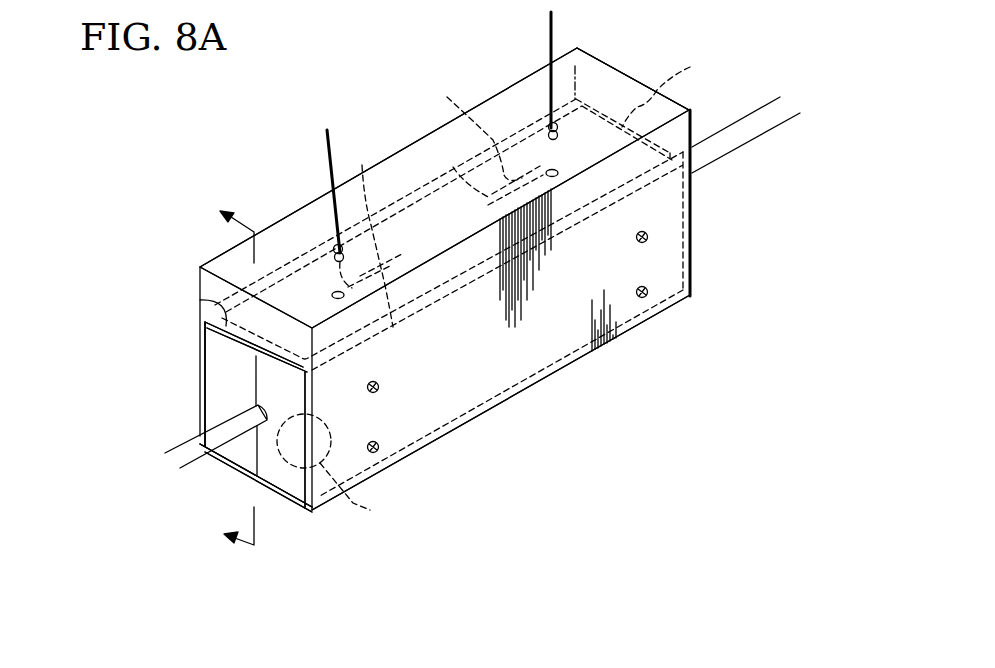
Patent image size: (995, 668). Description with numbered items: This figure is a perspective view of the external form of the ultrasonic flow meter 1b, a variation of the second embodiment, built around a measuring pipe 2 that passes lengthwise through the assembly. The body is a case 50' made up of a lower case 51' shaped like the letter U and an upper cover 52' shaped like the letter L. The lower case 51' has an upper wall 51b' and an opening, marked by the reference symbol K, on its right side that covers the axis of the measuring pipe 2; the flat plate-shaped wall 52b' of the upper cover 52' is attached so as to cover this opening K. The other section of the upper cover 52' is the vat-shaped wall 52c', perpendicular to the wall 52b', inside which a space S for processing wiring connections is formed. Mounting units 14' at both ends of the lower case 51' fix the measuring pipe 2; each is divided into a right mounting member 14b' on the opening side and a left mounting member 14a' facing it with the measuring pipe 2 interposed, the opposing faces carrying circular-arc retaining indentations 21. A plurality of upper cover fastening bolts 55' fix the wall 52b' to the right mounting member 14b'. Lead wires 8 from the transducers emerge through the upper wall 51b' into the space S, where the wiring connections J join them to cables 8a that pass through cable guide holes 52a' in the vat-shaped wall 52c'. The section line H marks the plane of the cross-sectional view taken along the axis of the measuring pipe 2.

The ultrasonic flow meter 1b is at (590, 496).
The measuring pipe 2 is at (753, 112).
The lead wires 8 is at (394, 330).
The cables 8a is at (327, 142).
The mounting units 14' is at (295, 476).
The left mounting member 14a' is at (169, 384).
The right mounting member 14b' is at (262, 505).
The retaining indentation 21 is at (242, 434).
The case 50' is at (483, 280).
The lower case 51' is at (216, 384).
The upper wall 51b' is at (150, 303).
The upper cover 52' is at (397, 188).
The cable guide holes 52a' is at (388, 168).
The wall 52b' is at (501, 402).
The wall 52c' is at (633, 58).
The upper cover fastening bolts 55' is at (508, 374).
The cross-section H- H is at (227, 370).
The wiring connections J is at (436, 203).
The opening K is at (333, 470).
The space for processing wiring connections S is at (662, 82).